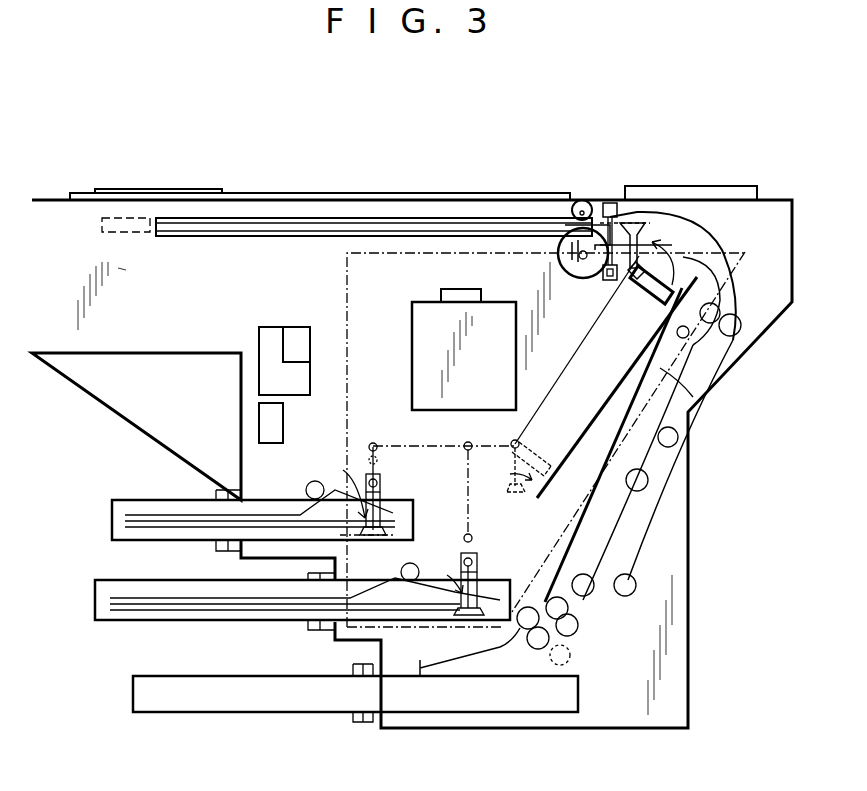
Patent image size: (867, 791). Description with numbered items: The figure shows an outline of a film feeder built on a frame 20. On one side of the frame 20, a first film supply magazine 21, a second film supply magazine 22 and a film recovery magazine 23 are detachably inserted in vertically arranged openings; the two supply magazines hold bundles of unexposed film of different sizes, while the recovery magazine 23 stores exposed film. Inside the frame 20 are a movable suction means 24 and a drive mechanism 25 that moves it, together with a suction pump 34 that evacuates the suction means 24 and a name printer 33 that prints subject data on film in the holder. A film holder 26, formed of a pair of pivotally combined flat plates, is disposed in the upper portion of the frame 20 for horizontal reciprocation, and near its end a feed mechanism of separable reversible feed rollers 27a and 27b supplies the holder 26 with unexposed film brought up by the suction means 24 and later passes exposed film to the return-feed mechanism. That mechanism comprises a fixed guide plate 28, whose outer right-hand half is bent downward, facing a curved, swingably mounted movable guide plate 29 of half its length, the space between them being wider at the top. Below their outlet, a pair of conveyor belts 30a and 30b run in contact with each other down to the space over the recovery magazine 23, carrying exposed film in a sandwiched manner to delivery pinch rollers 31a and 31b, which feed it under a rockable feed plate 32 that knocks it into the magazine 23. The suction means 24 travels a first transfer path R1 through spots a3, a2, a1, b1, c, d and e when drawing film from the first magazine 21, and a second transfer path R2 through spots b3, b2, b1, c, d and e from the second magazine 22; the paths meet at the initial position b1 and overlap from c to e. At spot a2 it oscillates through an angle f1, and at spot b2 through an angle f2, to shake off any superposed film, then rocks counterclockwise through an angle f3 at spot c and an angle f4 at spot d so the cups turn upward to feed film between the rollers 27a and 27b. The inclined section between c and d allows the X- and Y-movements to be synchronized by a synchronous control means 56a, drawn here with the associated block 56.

The frame 20 is at (540, 730).
The first film supply magazine 21 is at (165, 500).
The second film supply magazine 22 is at (95, 606).
The film recovery magazine 23 is at (133, 692).
The movable suction means 24 is at (660, 304).
The drive mechanism 25 is at (374, 253).
The film holder 26 is at (243, 218).
The reversible feed roller 27a is at (582, 200).
The reversible feed roller 27b is at (575, 236).
The fixed guide plate 28 is at (705, 228).
The movable guide plate 29 is at (717, 248).
The conveyor belt 30a is at (714, 372).
The conveyor belt 30b is at (700, 398).
The delivery pinch roller 31a is at (560, 604).
The delivery pinch roller 31b is at (573, 630).
The rockable feed plate 32 is at (463, 654).
The name printer 33 is at (412, 318).
The suction pump 34 is at (259, 420).
The block 56 is at (266, 343).
The synchronous control means 56a is at (297, 336).
The first transfer path R1 is at (415, 442).
The second transfer path R2 is at (470, 483).
The spot a1 is at (374, 436).
The spot a2 is at (388, 460).
The spot a3 is at (388, 484).
The spot b1 is at (469, 435).
The spot b2 is at (483, 540).
The spot b3 is at (483, 565).
The spot c is at (513, 430).
The spot d is at (632, 270).
The spot e is at (607, 286).
The angle f1 is at (356, 491).
The angle f2 is at (456, 582).
The angle f3 is at (514, 467).
The angle f4 is at (666, 258).